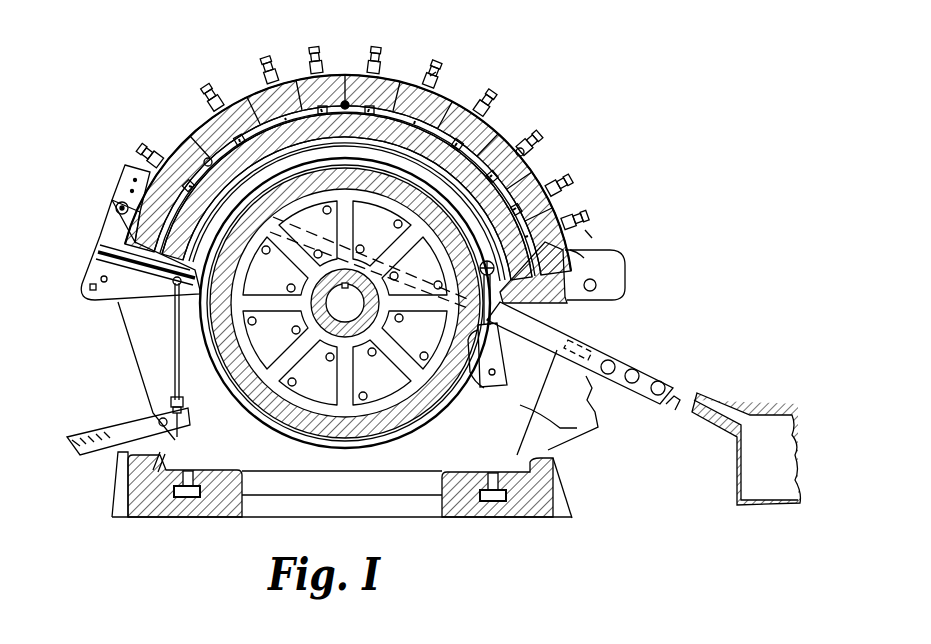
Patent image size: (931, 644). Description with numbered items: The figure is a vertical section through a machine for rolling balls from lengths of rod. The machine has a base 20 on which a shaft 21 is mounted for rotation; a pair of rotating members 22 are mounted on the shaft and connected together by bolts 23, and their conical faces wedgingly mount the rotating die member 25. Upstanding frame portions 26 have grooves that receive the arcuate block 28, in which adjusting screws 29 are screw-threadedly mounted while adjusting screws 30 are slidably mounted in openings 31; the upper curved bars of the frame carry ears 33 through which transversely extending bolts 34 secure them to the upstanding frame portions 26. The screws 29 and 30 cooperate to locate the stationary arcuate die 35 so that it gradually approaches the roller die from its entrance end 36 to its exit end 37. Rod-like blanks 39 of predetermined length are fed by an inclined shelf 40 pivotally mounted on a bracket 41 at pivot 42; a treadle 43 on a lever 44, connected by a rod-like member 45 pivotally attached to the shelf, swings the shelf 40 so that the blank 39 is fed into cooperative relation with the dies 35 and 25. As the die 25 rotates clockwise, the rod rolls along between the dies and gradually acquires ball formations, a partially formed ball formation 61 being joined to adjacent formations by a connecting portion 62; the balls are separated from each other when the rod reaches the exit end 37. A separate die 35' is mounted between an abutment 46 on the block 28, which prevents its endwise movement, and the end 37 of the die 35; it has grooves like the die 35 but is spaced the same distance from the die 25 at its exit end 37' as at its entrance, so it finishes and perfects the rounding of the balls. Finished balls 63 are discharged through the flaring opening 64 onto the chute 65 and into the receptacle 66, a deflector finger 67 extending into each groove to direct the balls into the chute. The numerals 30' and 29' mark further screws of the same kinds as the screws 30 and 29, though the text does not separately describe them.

The base 20 is at (482, 518).
The shaft 21 is at (360, 310).
The rotating members 22 is at (405, 416).
The bolts 23 is at (266, 254).
The die member 25 is at (298, 432).
The upstanding frame portions 26 is at (577, 428).
The arcuate block 28 is at (182, 152).
The adjusting screws 29 is at (377, 57).
The adjusting screws 30 is at (345, 88).
The openings 31 is at (222, 112).
The ears 33 is at (590, 268).
The bolts 34 is at (204, 162).
The stationary arcuate die 35 is at (348, 146).
The entrance end 36 is at (168, 302).
The exit end 37 is at (388, 196).
The rod-like blanks 39 is at (188, 350).
The inclined shelf 40 is at (115, 298).
The bracket 41 is at (118, 192).
The pivot 42 is at (116, 212).
The treadle 43 is at (75, 434).
The lever 44 is at (145, 418).
The rod-like member 45 is at (175, 380).
The abutment 46 is at (562, 300).
The partially formed ball formation 61 is at (432, 74).
The connecting portion 62 is at (312, 158).
The finished balls 63 is at (478, 265).
The flaring opening 64 is at (512, 342).
The chute 65 is at (588, 357).
The receptacle 66 is at (762, 468).
The finger 67 is at (484, 380).
The fitting 30' is at (560, 162).
The separate die member 35' is at (591, 204).
The nozzle fitting 29' is at (614, 218).
The exit end 37' is at (605, 240).